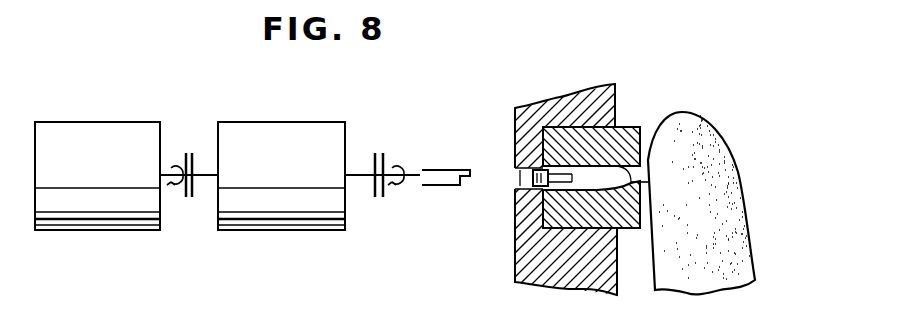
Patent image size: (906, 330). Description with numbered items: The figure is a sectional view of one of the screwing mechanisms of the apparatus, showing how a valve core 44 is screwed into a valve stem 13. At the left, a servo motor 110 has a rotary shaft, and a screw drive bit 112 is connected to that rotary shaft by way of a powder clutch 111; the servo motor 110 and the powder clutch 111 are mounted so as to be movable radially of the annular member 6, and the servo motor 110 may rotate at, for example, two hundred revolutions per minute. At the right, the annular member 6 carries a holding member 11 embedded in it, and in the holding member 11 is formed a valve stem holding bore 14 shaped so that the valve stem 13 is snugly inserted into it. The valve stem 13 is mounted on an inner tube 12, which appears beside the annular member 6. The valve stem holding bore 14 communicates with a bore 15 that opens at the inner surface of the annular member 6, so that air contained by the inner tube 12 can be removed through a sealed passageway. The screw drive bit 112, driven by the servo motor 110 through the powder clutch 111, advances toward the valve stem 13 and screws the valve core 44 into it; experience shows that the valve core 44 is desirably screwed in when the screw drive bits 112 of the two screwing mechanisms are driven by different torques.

The annular member 6 is at (569, 98).
The holding member 11 is at (622, 127).
The inner tube 12 is at (680, 113).
The valve stem 13 is at (637, 228).
The valve stem holding bore 14 is at (622, 176).
The bore 15 is at (521, 171).
The valve core 44 is at (530, 183).
The servo motor 110 is at (103, 122).
The powder clutch 111 is at (287, 122).
The screw drive bit 112 is at (435, 187).